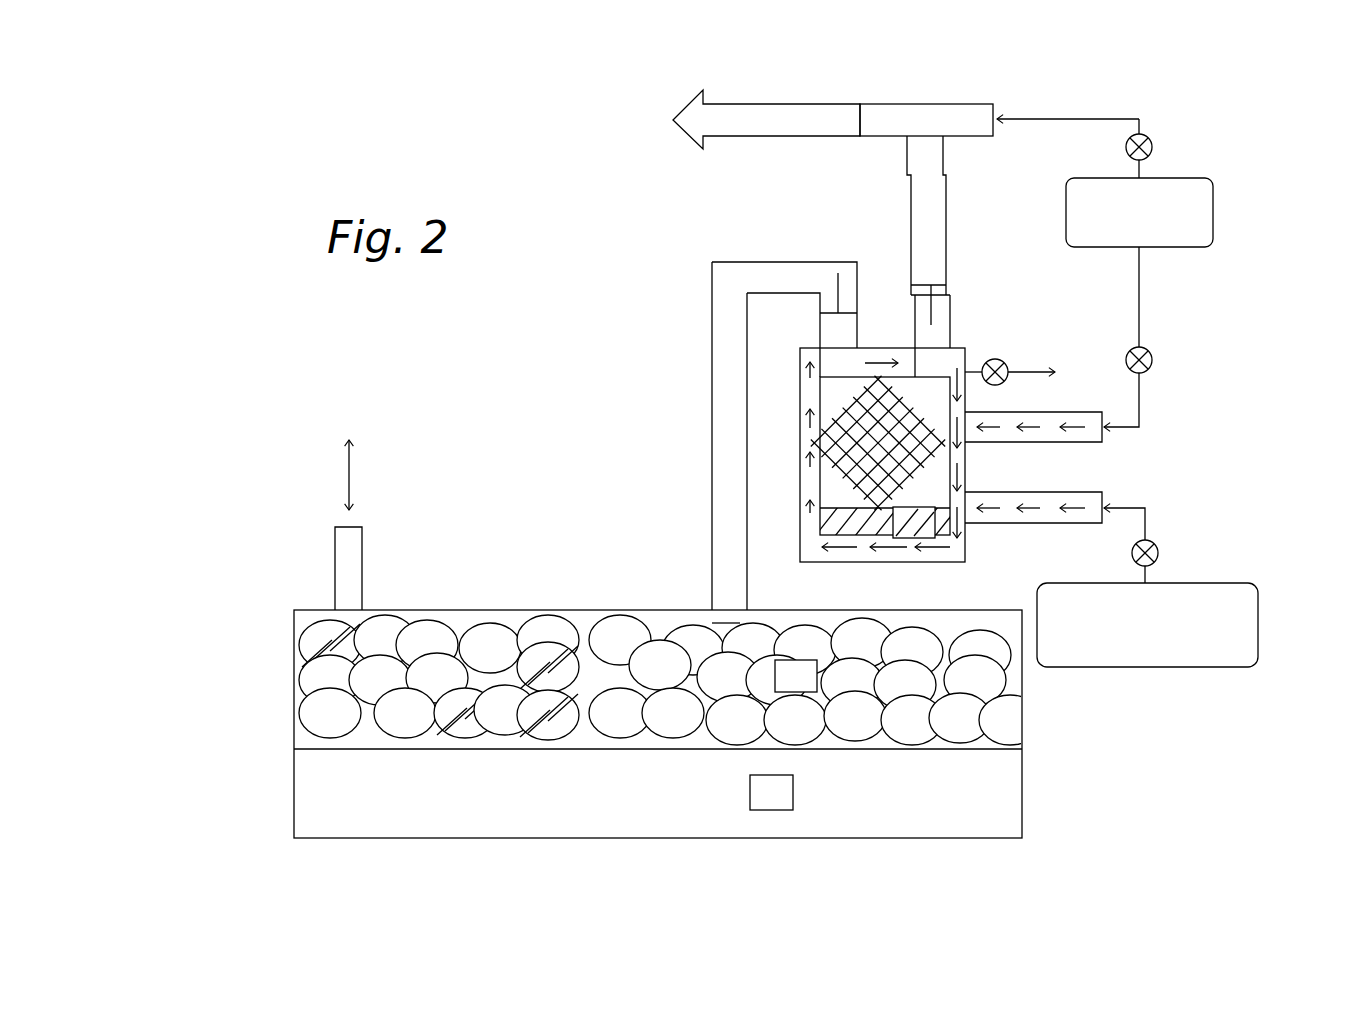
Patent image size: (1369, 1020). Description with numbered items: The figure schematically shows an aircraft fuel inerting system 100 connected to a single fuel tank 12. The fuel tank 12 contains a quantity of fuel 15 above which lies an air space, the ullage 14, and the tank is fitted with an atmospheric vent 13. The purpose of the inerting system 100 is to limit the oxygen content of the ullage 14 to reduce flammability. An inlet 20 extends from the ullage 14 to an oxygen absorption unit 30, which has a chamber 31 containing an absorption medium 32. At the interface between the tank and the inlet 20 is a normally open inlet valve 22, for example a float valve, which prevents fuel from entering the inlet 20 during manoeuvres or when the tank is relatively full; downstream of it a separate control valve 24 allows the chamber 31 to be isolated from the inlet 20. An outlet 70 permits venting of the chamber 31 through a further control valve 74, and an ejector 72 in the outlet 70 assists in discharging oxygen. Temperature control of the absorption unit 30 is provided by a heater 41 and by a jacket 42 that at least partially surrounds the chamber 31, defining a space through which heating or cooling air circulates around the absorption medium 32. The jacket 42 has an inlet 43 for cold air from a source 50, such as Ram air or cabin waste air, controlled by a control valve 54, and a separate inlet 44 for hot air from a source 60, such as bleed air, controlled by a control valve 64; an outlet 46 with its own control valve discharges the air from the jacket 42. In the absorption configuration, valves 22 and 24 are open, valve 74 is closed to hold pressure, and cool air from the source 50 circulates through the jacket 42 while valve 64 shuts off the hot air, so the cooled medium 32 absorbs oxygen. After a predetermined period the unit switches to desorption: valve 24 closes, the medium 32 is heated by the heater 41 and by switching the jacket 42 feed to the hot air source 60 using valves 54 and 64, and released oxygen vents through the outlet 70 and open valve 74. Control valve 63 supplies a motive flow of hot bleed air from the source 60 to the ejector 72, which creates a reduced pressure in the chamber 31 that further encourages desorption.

The inerting system 100 is at (1270, 151).
The fuel tank 12 is at (294, 712).
The atmospheric vent 13 is at (335, 563).
The ullage 14 is at (1022, 715).
The fuel 15 is at (660, 820).
The inlet 20 is at (712, 465).
The inlet valve 22 is at (727, 620).
The control valve 24 is at (832, 300).
The oxygen absorption unit 30 is at (1197, 424).
The chamber 31 is at (835, 415).
The absorption medium 32 is at (838, 447).
The heater 41 is at (870, 535).
The jacket 42 is at (965, 548).
The inlet for cold air 43 is at (1105, 497).
The inlet for hot air 44 is at (1098, 444).
The outlet 46 is at (998, 360).
The cold air source 50 is at (1260, 625).
The control valve 54 is at (1158, 554).
The hot air source 60 is at (1214, 215).
The control valve 63 is at (1152, 145).
The control valve 64 is at (1152, 360).
The outlet 70 is at (911, 205).
The ejector 72 is at (922, 103).
The control valve 74 is at (935, 315).